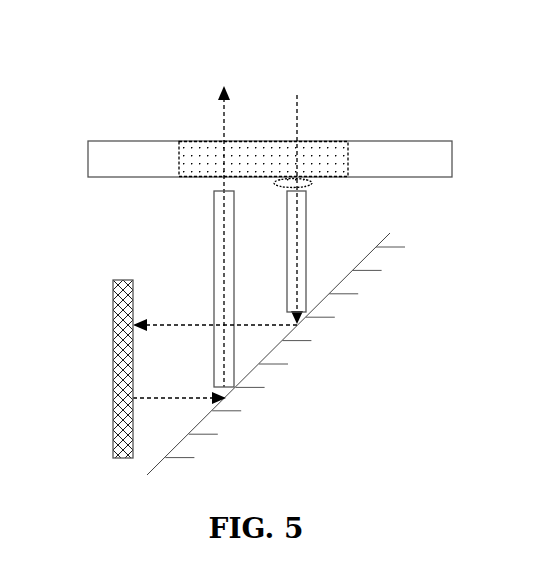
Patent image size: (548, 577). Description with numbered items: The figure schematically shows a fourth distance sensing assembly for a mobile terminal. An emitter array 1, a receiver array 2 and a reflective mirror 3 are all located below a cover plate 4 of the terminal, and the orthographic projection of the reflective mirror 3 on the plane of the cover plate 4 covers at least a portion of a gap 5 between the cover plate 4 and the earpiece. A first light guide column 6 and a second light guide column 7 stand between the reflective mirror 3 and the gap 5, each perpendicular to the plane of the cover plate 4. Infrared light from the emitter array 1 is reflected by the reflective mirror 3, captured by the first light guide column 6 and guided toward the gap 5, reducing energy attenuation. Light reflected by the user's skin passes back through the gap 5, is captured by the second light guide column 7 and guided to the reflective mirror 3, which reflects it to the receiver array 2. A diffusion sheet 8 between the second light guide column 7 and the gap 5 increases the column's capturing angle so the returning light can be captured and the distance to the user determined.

The emitter array 1 is at (113, 408).
The receiver array 2 is at (115, 320).
The reflective mirror 3 is at (280, 343).
The cover plate 4 is at (403, 140).
The gap 5 is at (249, 141).
The first light guide column 6 is at (214, 215).
The second light guide column 7 is at (306, 241).
The diffusion sheet 8 is at (312, 183).